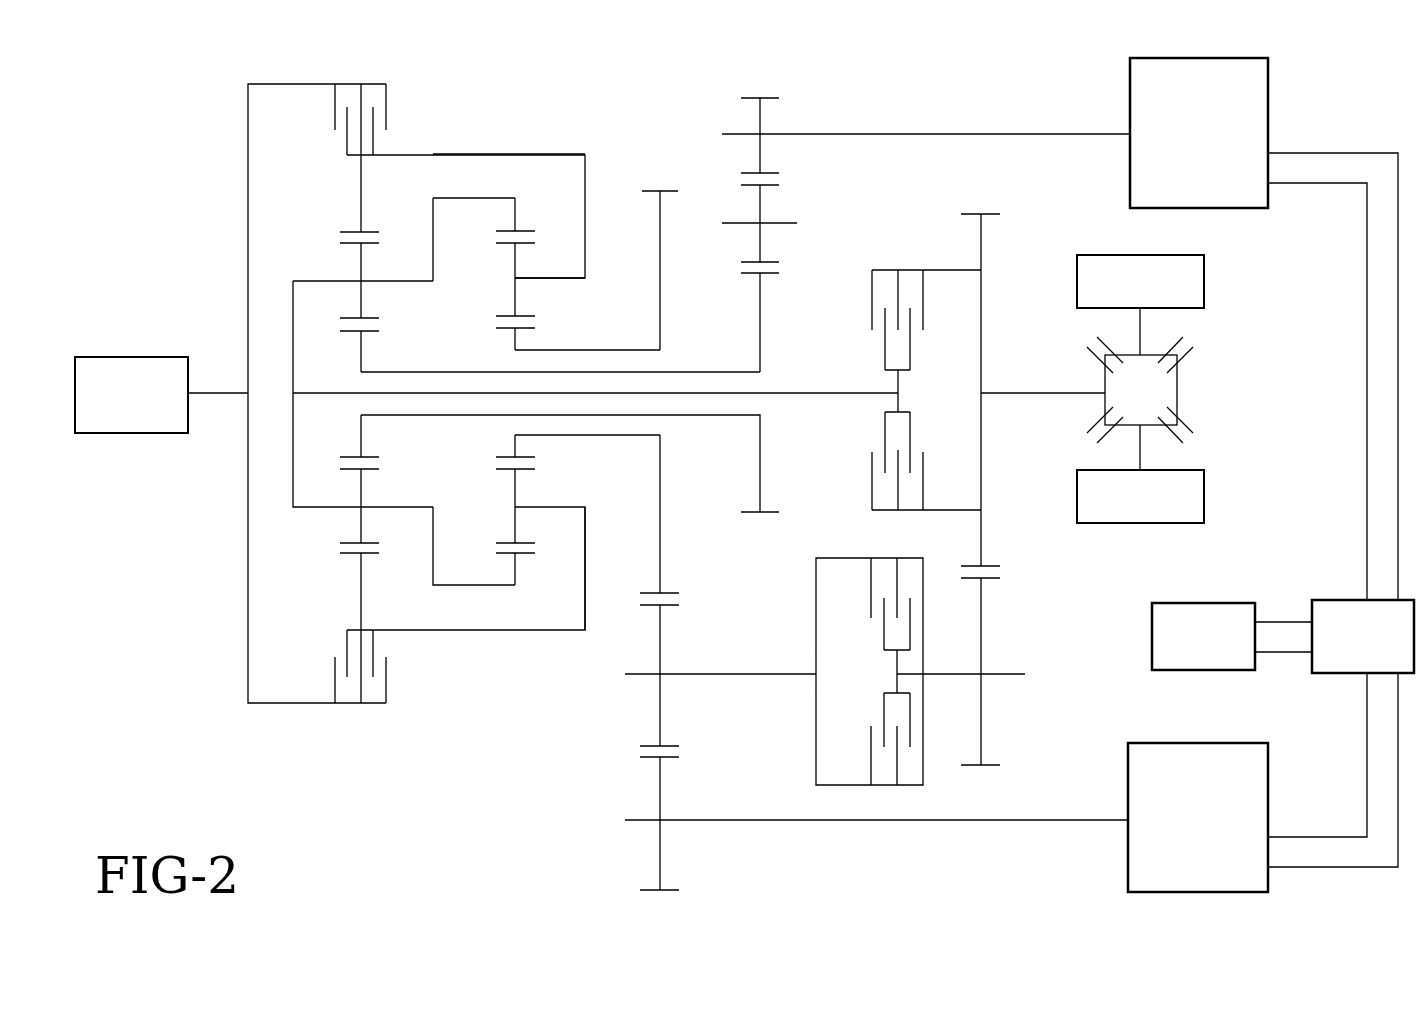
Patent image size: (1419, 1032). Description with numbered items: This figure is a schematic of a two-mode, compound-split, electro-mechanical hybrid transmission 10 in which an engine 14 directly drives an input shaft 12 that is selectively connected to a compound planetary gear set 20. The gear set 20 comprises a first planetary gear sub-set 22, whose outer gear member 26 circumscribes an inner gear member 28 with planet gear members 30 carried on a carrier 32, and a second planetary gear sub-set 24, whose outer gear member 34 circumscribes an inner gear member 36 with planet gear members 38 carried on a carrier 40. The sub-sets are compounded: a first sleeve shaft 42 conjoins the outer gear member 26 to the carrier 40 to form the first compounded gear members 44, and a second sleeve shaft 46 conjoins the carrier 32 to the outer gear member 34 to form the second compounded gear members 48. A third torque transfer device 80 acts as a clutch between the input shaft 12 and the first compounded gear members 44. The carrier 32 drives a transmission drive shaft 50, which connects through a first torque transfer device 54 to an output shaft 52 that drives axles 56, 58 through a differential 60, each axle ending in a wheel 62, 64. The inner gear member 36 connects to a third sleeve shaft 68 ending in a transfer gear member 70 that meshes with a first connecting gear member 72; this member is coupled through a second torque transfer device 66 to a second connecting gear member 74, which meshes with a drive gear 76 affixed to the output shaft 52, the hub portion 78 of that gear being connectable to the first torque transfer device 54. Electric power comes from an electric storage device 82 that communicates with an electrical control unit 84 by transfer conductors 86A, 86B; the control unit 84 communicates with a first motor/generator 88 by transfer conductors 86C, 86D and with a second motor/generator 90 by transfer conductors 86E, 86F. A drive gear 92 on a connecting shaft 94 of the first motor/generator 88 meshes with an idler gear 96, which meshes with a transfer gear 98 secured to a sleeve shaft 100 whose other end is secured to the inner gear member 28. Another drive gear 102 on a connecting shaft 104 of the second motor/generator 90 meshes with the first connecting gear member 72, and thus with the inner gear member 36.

The hybrid transmission 10 is at (516, 735).
The input shaft 12 is at (221, 392).
The engine 14 is at (116, 410).
The compound planetary gear set 20 is at (429, 134).
The first planetary gear sub-set 22 is at (317, 181).
The second planetary gear sub-set 24 is at (560, 224).
The outer gear member 26 is at (361, 206).
The inner gear member 28 is at (361, 346).
The planet gear members 30 is at (361, 260).
The carrier 32 is at (300, 508).
The outer gear member 34 is at (518, 570).
The inner gear member 36 is at (515, 439).
The planet gear members 38 is at (515, 290).
The carrier 40 is at (567, 282).
The first sleeve shaft 42 is at (549, 153).
The first compounded gear members 44 is at (490, 151).
The second sleeve shaft 46 is at (487, 197).
The second compounded gear members 48 is at (456, 585).
The transmission drive shaft 50 is at (320, 392).
The output shaft 52 is at (1024, 392).
The first torque transfer device 54 is at (898, 264).
The axle 56 is at (1141, 325).
The axle 58 is at (1141, 455).
The differential 60 is at (1150, 383).
The wheel 62 is at (1125, 297).
The wheel 64 is at (1125, 511).
The second torque transfer device 66 is at (862, 746).
The third sleeve shaft 68 is at (607, 436).
The transfer gear member 70 is at (660, 548).
The first connecting gear member 72 is at (660, 642).
The second connecting gear member 74 is at (981, 637).
The drive gear 76 is at (981, 540).
The hub portion 78 is at (981, 477).
The third torque transfer device 80 is at (374, 710).
The electric storage device 82 is at (1188, 652).
The electrical control unit 84 is at (1353, 652).
The transfer conductor 86A is at (1283, 621).
The transfer conductor 86B is at (1283, 653).
The transfer conductor 86C is at (1320, 183).
The transfer conductor 86D is at (1320, 153).
The transfer conductor 86E is at (1367, 768).
The transfer conductor 86F is at (1398, 806).
The first motor/generator 88 is at (1184, 148).
The second motor/generator 90 is at (1183, 835).
The drive gear 92 is at (760, 111).
The connecting shaft 94 is at (957, 134).
The idler gear 96 is at (760, 197).
The transfer gear 98 is at (760, 305).
The sleeve shaft 100 is at (708, 372).
The drive gear 102 is at (660, 860).
The connecting shaft 104 is at (1035, 822).